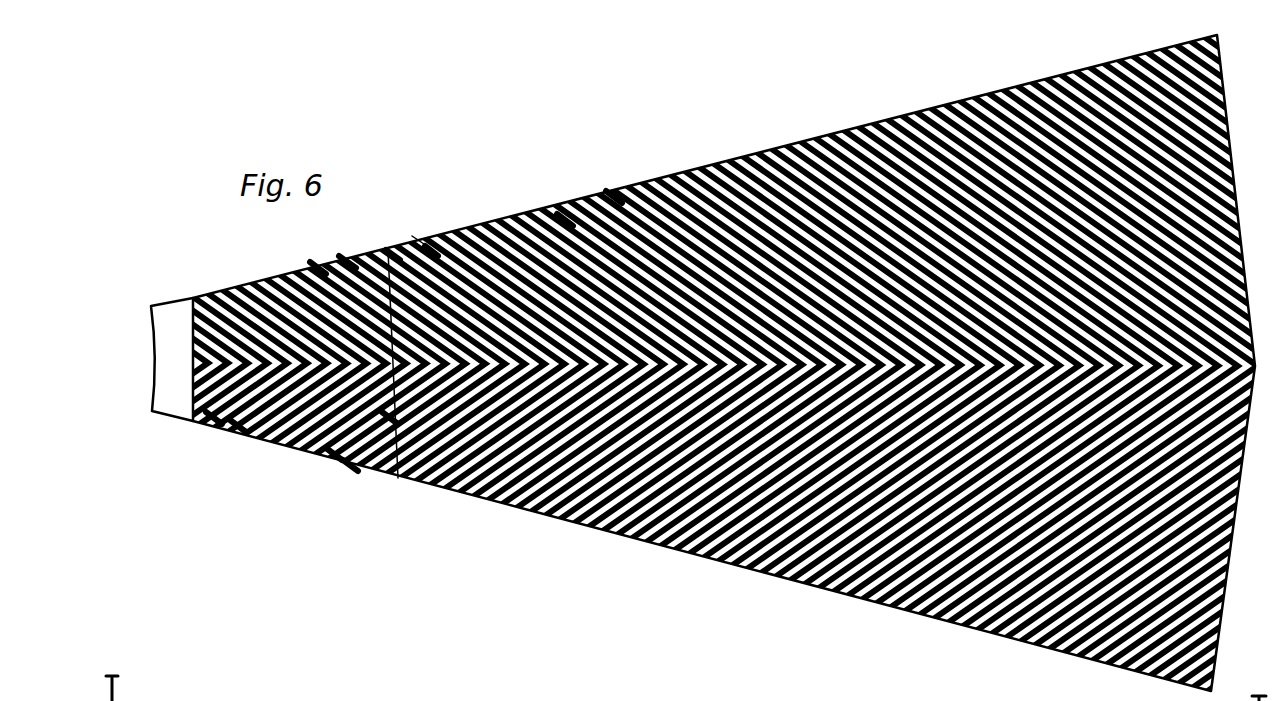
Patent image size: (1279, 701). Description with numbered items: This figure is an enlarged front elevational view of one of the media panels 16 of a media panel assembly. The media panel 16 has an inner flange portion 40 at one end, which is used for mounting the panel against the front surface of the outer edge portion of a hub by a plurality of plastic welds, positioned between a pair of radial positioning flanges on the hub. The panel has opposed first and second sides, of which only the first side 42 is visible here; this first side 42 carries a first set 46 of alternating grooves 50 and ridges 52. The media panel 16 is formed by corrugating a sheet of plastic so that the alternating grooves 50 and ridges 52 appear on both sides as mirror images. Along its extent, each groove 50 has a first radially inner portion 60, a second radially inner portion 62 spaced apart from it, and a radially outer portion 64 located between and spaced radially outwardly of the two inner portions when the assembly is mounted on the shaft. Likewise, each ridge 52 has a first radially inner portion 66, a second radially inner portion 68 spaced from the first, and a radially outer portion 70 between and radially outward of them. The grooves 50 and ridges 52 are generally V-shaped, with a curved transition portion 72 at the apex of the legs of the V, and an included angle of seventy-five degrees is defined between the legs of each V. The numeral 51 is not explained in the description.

The media panel 16 is at (446, 214).
The inner flange portion 40 is at (160, 395).
The first side 42 is at (549, 206).
The first set of alternating grooves and ridges 46 is at (599, 181).
The groove 50 is at (198, 404).
The strip 51 is at (374, 404).
The ridge 52 is at (222, 412).
The first radially inner portion 60 is at (302, 254).
The second radially inner portion 62 is at (318, 440).
The radially outer portion 64 is at (378, 242).
The first radially inner portion 66 is at (331, 248).
The second radially inner portion 68 is at (335, 452).
The radially outer portion 70 is at (417, 238).
The curved transition portion 72 is at (416, 236).